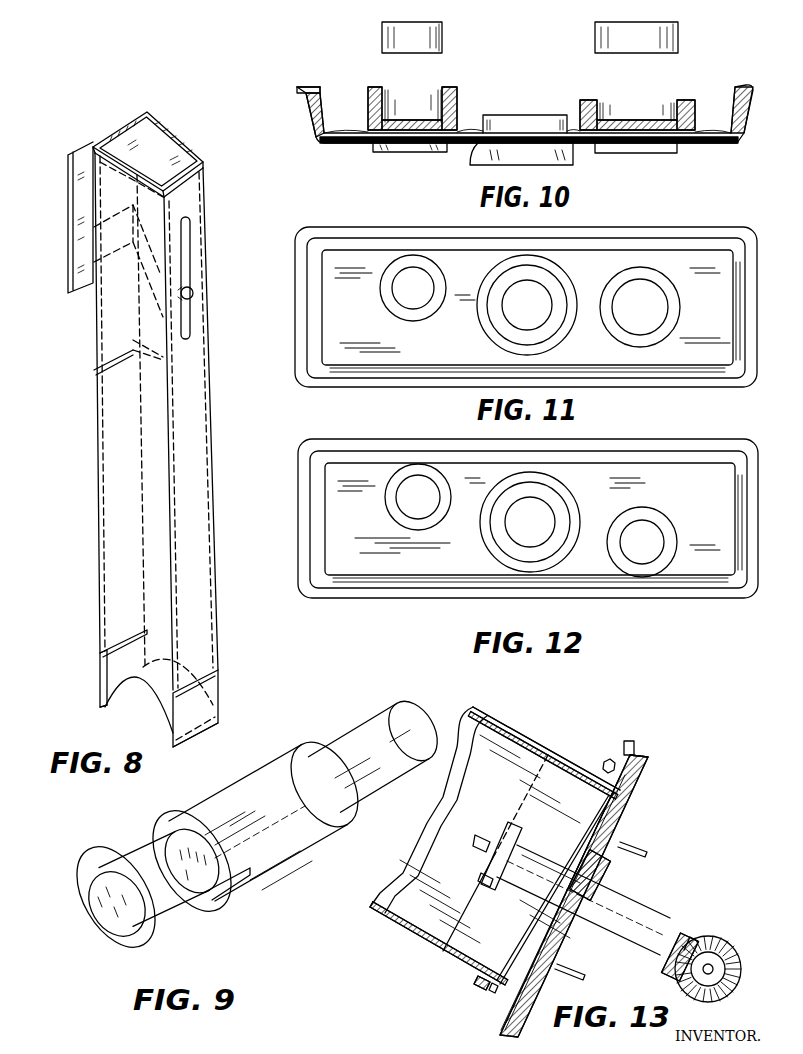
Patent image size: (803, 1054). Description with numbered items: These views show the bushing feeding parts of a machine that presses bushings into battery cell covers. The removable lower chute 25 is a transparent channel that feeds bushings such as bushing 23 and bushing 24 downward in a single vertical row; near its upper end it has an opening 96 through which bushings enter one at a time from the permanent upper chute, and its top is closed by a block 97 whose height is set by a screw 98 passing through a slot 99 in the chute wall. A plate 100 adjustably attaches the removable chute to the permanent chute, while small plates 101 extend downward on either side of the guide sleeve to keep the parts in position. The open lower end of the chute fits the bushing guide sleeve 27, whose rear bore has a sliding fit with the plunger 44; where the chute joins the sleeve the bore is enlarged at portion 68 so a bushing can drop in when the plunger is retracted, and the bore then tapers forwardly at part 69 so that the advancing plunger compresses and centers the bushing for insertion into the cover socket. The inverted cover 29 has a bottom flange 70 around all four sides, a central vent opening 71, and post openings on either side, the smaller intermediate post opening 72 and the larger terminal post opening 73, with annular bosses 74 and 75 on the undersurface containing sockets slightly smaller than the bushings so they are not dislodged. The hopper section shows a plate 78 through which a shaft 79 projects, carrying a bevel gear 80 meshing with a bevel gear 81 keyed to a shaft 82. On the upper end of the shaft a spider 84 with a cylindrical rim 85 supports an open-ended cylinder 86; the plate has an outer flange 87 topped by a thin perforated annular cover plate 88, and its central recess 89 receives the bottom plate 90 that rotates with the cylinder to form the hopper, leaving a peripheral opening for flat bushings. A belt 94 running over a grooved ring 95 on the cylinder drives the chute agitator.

In FIG. 10, the bushing 23 is at (443, 33).
In FIG. 10, the bushing 24 is at (680, 32).
In FIG. 8, the chute 25 is at (113, 511).
In FIG. 9, the bushing guide sleeve 27 is at (298, 855).
In FIG. 10, the cover 29 is at (310, 120).
In FIG. 9, the plunger 44 is at (173, 840).
In FIG. 9, the enlarged bore portion 68 is at (208, 894).
In FIG. 9, the tapered bore part 69 is at (98, 933).
In FIG. 10, the bottom flange 70 is at (748, 92).
In FIG. 11, the bottom flange 70 is at (748, 260).
In FIG. 12, the bottom flange 70 is at (752, 502).
In FIG. 11, the vent opening 71 is at (528, 282).
In FIG. 12, the vent opening 71 is at (528, 498).
In FIG. 11, the intermediate post opening 72 is at (403, 268).
In FIG. 12, the intermediate post opening 72 is at (415, 478).
In FIG. 11, the terminal post opening 73 is at (647, 282).
In FIG. 12, the terminal post opening 73 is at (657, 535).
In FIG. 10, the annular boss 74 is at (452, 88).
In FIG. 10, the annular boss 75 is at (685, 100).
In FIG. 13, the plate 78 is at (640, 802).
In FIG. 13, the shaft 79 is at (527, 888).
In FIG. 13, the bevel gear 80 is at (690, 937).
In FIG. 13, the bevel gear 81 is at (735, 961).
In FIG. 13, the shaft 82 is at (715, 969).
In FIG. 13, the spider 84 is at (525, 808).
In FIG. 13, the cylindrical rim 85 is at (519, 740).
In FIG. 13, the cylinder 86 is at (563, 757).
In FIG. 13, the outer flange 87 is at (650, 757).
In FIG. 13, the annular cover plate 88 is at (625, 762).
In FIG. 13, the recess 89 is at (635, 823).
In FIG. 13, the bottom plate 90 is at (610, 863).
In FIG. 13, the belt 94 is at (610, 762).
In FIG. 13, the grooved ring 95 is at (483, 981).
In FIG. 8, the opening 96 is at (103, 347).
In FIG. 8, the block 97 is at (148, 153).
In FIG. 8, the screw 98 is at (193, 292).
In FIG. 8, the slot 99 is at (190, 245).
In FIG. 8, the plate 100 is at (72, 197).
In FIG. 8, the small plates 101 is at (100, 707).